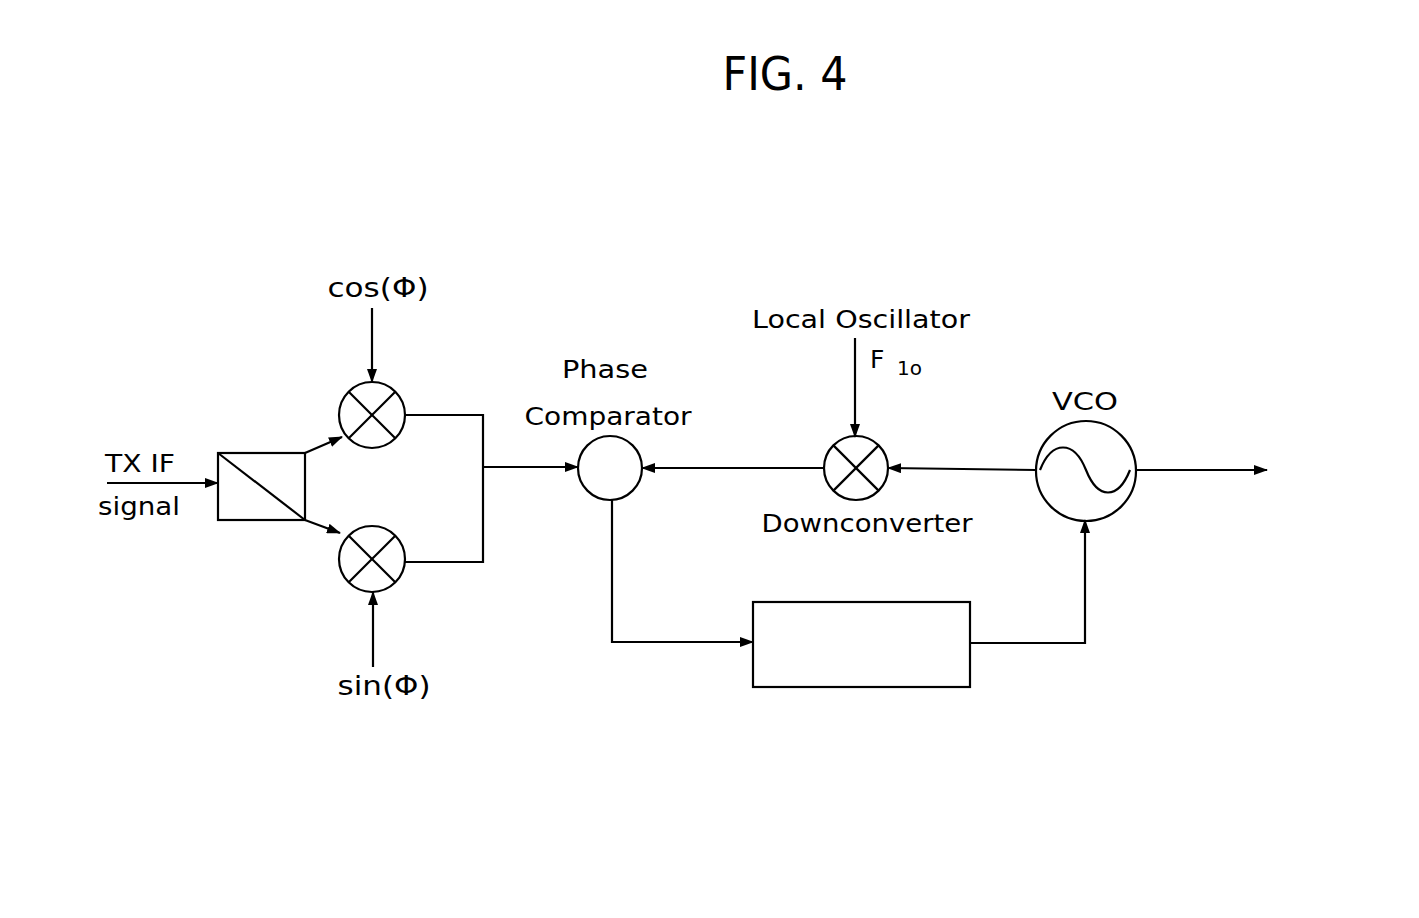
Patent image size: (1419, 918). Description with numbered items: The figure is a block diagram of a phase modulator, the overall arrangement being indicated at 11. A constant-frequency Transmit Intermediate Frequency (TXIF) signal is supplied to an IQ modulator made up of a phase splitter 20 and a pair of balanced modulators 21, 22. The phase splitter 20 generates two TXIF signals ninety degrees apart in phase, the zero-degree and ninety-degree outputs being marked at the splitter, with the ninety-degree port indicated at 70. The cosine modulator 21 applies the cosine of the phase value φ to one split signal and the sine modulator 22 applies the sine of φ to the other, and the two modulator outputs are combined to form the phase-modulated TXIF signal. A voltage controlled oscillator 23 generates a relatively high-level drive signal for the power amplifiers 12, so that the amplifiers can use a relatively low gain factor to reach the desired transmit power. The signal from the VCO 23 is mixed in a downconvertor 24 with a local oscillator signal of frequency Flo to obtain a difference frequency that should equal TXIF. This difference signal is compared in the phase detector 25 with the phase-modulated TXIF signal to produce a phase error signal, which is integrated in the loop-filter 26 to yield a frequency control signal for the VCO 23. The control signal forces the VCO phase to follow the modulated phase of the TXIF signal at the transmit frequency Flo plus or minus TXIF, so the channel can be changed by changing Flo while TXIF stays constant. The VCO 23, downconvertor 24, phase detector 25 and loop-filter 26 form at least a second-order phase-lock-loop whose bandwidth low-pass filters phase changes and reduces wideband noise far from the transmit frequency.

The transmitter upconversion system 11 is at (1042, 295).
The power amplifiers 12 is at (1272, 474).
The phase splitter 20 is at (253, 454).
The 90 degree phase port 70 is at (261, 486).
The cosine modulator 21 is at (405, 403).
The sine modulator 22 is at (405, 572).
The voltage controlled oscillator 23 is at (1128, 502).
The downconvertor 24 is at (885, 455).
The phase detector 25 is at (632, 490).
The loop-filter 26 is at (918, 687).